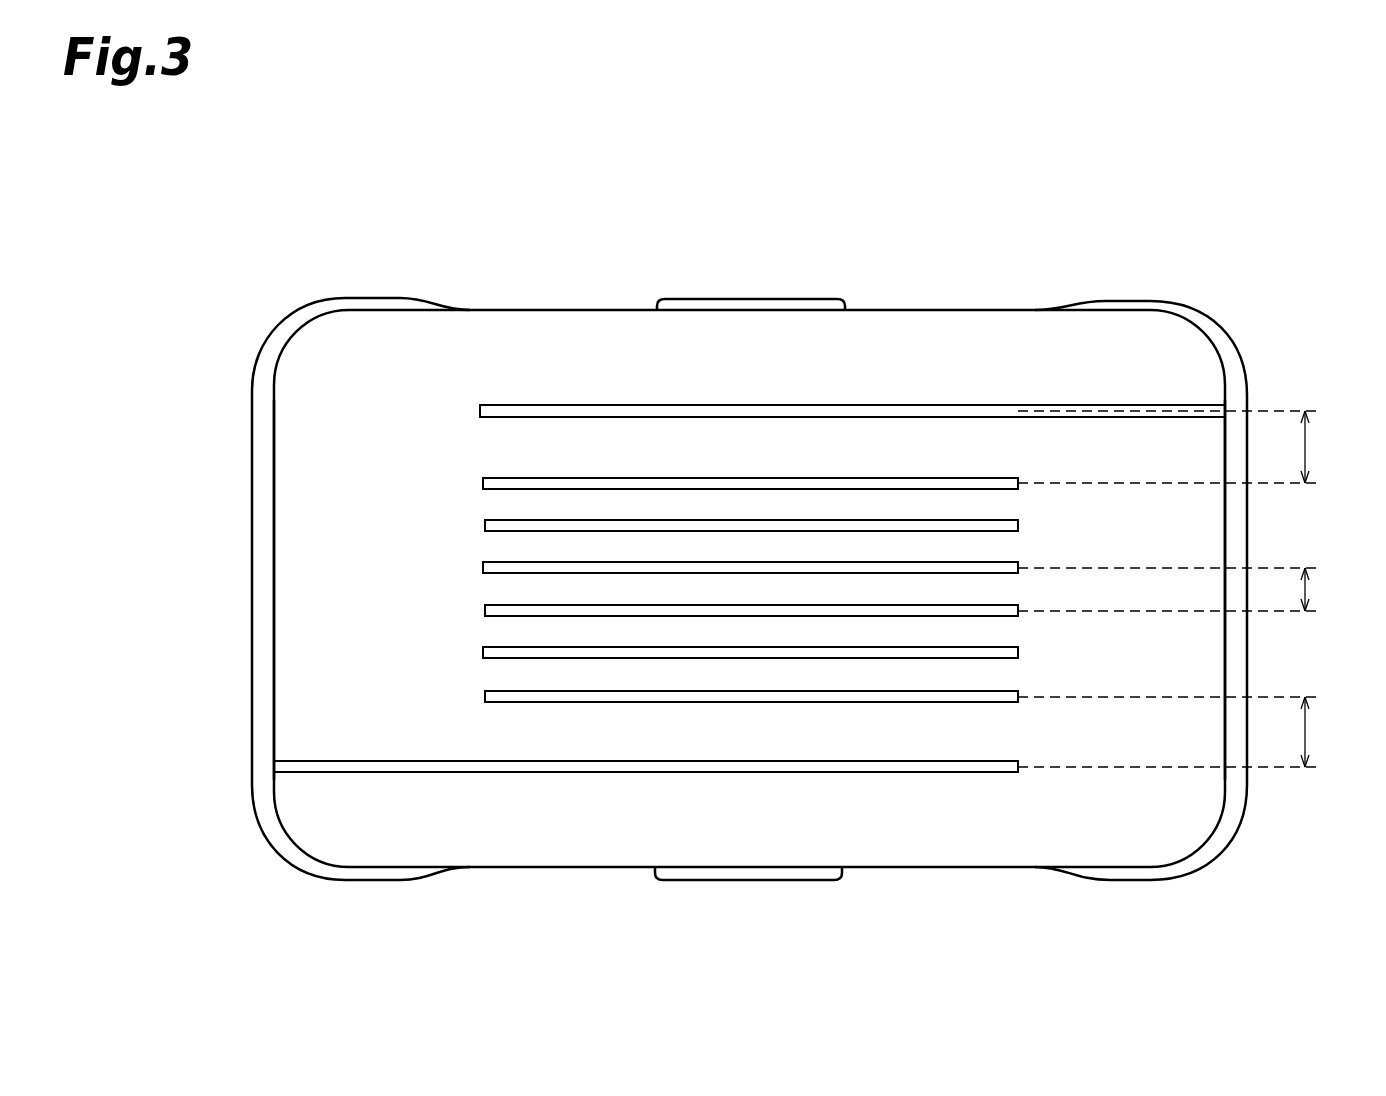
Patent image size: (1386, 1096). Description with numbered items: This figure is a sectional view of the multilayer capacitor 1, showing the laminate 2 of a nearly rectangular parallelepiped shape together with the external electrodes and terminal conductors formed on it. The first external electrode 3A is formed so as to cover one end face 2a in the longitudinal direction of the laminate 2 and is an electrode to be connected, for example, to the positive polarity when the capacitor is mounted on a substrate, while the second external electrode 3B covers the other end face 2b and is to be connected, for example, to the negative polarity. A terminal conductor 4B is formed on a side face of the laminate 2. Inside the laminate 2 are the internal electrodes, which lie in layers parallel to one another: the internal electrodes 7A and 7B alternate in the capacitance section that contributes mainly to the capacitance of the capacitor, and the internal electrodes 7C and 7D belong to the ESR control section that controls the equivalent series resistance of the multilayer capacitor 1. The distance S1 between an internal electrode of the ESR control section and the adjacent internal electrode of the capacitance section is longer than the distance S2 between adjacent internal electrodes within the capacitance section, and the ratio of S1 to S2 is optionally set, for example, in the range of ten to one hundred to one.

The multilayer capacitor 1 is at (1232, 219).
The laminate 2 is at (345, 350).
The one end face 2a is at (272, 493).
The other end face 2b is at (1225, 513).
The first external electrode 3A is at (265, 375).
The second external electrode 3B is at (1230, 367).
The terminal conductor 4B is at (756, 298).
The internal electrode 7A is at (505, 478).
The internal electrode 7B is at (505, 520).
The internal electrode 7C is at (562, 773).
The internal electrode 7D is at (560, 405).
The distance S1 is at (1327, 589).
The distance S2 is at (1327, 594).